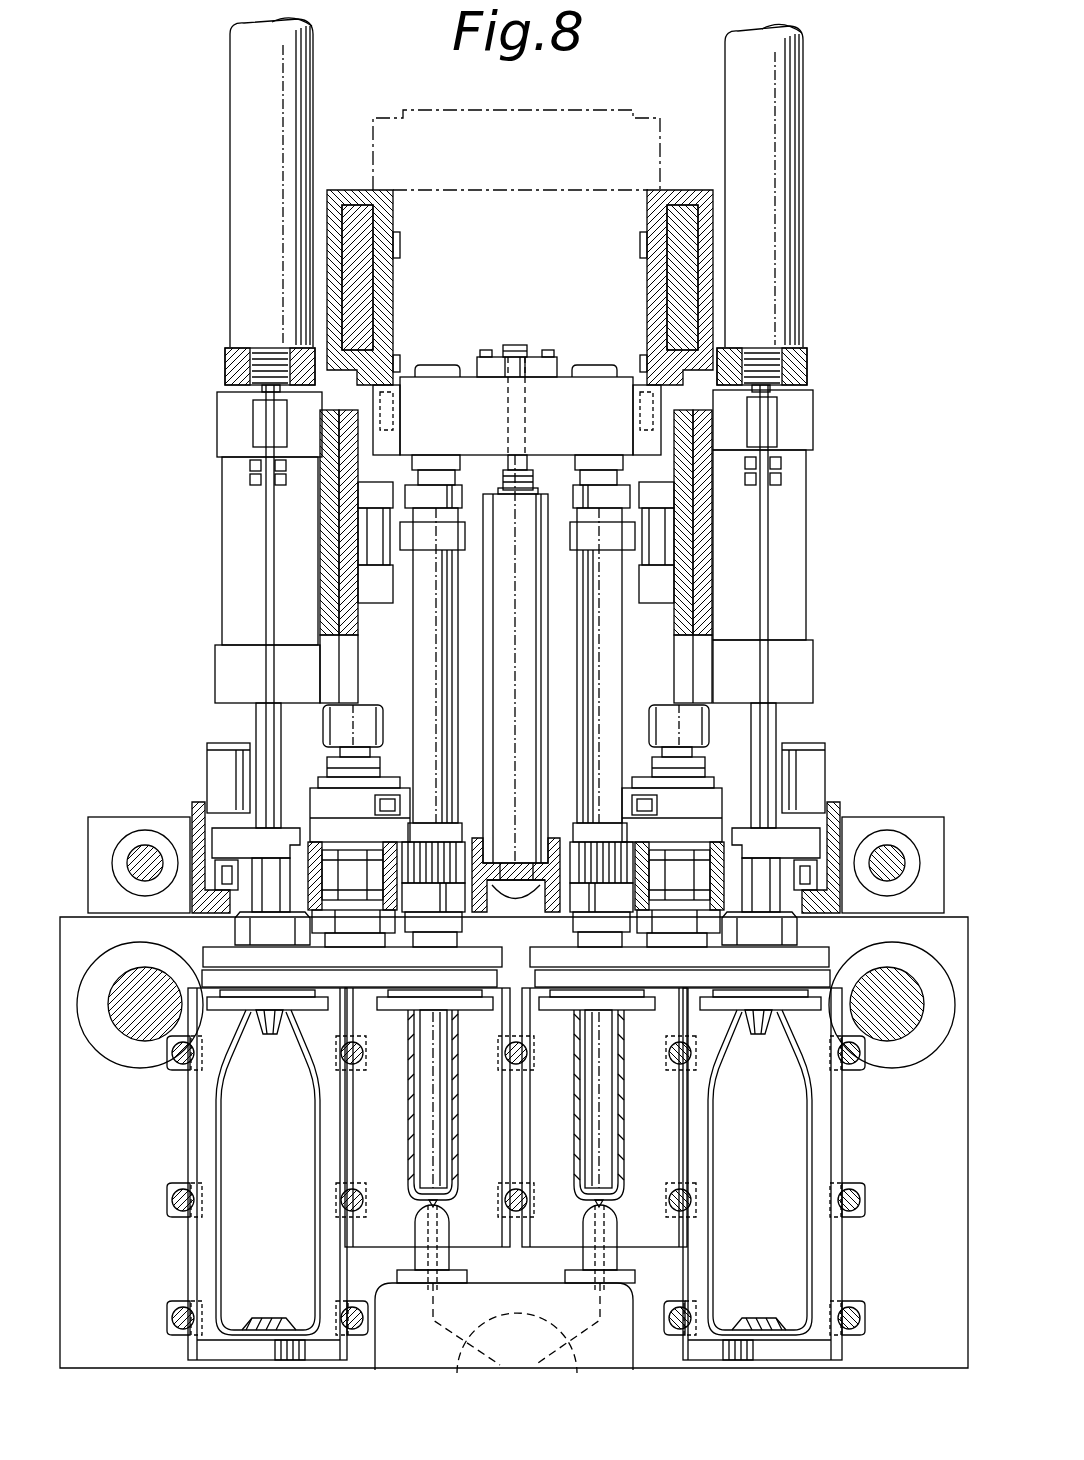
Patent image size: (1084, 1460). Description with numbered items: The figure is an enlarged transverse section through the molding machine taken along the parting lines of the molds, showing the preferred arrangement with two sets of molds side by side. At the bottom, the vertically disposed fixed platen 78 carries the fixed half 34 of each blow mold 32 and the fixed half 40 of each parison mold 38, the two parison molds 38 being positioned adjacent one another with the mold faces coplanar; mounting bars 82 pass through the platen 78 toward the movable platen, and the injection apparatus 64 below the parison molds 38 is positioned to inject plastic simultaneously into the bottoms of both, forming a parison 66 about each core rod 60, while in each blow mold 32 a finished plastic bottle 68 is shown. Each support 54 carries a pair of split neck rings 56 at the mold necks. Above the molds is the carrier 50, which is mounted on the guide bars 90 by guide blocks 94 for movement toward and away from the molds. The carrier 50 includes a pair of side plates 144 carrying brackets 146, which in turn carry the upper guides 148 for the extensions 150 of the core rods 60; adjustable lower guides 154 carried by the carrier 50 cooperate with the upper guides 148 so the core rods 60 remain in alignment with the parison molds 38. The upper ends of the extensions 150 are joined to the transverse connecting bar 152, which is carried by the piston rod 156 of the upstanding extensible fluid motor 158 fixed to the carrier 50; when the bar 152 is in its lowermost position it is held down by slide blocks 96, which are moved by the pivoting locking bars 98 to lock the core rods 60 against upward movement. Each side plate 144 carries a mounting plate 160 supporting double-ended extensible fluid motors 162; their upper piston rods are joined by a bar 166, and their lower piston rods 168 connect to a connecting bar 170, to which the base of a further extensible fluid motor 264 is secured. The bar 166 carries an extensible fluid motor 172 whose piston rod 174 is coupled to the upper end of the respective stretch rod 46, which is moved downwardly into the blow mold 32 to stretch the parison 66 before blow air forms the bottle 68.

The extensible fluid motor 172 is at (248, 91).
The bar 166 is at (808, 381).
The slide block 96 is at (394, 310).
The locking bar 98 is at (345, 259).
The piston rod 174 is at (265, 421).
The stretch rod 46 is at (266, 531).
The extensible fluid motor 162 is at (795, 562).
The mounting plate 160 is at (332, 569).
The side plate 144 is at (350, 593).
The bracket 146 is at (386, 598).
The transverse connecting bar 152 is at (570, 125).
The piston rod 156 is at (518, 348).
The upper guide 148 is at (428, 528).
The extension 150 is at (425, 664).
The extensible fluid motor 158 is at (523, 644).
The lower guide 154 is at (530, 880).
The carrier 50 is at (556, 808).
The support 54 is at (475, 961).
The fixed platen 78 is at (942, 938).
The mounting bar 82 is at (135, 990).
The guide block 94 is at (98, 823).
The guide bar 90 is at (145, 850).
The extensible fluid motor 264 is at (222, 755).
The piston rod 168 is at (773, 723).
The connecting bar 170 is at (742, 825).
The fixed half 34 is at (200, 1100).
The blow mold 32 is at (190, 1138).
The fixed half 40 is at (490, 1126).
The plastic bottle 68 is at (230, 1150).
The split neck ring 56 is at (315, 1008).
The parison 66 is at (411, 1120).
The core rod 60 is at (425, 1082).
The parison mold 38 is at (551, 1236).
The injection apparatus 64 is at (625, 1302).